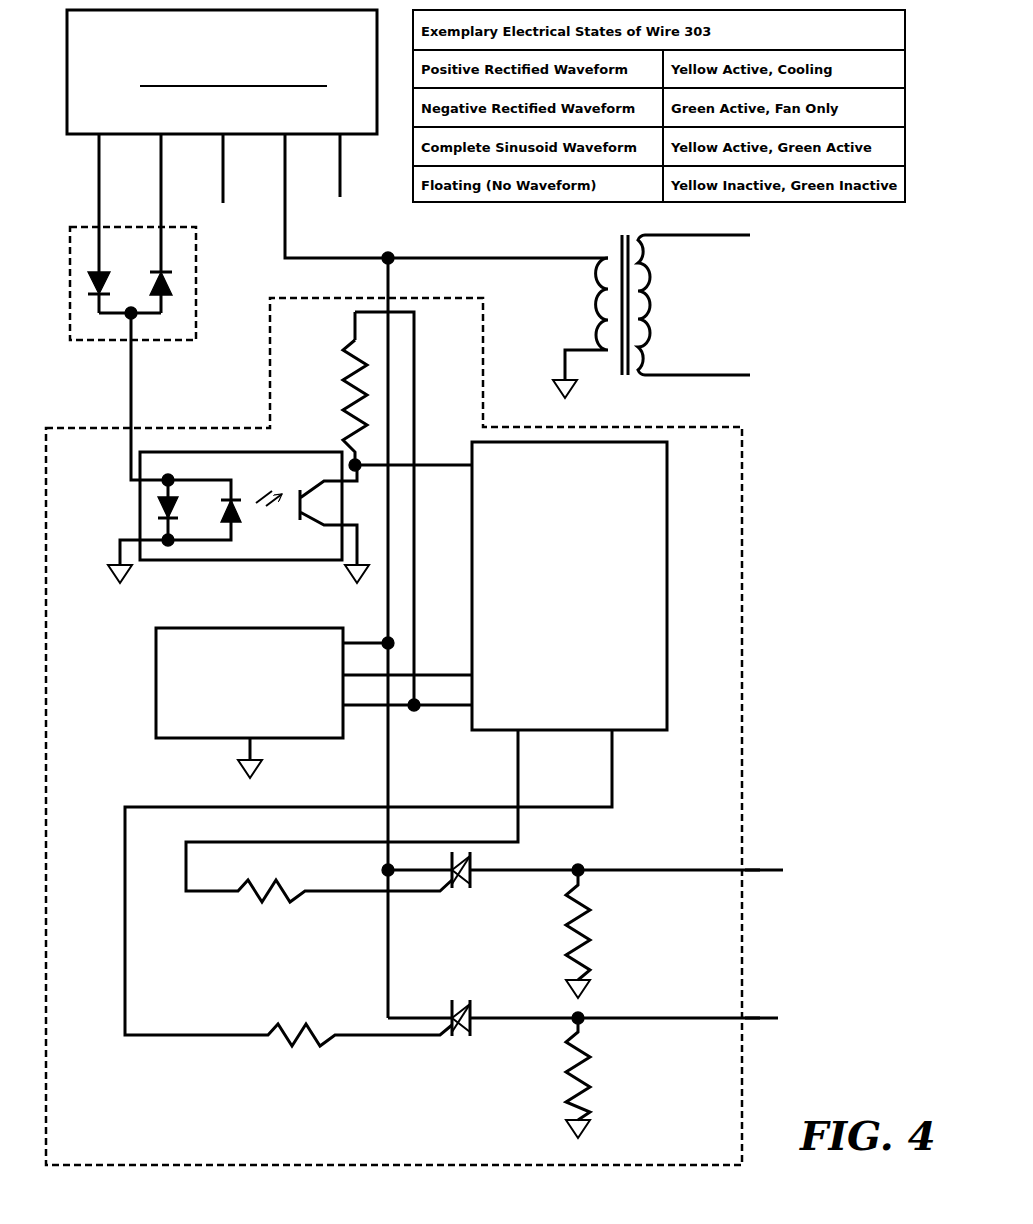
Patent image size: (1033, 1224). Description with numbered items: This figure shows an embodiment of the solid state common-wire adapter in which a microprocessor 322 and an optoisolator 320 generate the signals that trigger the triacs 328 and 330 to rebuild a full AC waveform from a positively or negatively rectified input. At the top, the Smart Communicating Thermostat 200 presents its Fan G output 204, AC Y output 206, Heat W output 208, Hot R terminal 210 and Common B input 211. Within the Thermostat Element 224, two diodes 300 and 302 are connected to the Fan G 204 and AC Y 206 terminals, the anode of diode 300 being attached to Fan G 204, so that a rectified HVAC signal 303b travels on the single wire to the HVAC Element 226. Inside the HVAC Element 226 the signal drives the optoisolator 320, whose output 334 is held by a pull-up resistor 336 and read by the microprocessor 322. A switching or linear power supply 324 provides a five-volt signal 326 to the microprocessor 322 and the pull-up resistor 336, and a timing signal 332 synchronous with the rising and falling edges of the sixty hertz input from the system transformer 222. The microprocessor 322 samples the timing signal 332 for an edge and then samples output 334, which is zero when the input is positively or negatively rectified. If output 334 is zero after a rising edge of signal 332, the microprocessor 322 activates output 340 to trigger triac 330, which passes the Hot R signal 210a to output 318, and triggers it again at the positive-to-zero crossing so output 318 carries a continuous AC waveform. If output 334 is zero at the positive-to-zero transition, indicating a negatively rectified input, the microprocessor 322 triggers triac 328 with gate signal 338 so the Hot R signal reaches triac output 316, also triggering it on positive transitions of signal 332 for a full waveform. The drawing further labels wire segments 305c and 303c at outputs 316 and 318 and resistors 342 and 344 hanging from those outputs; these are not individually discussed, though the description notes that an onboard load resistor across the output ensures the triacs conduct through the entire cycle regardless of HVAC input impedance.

The smart communicating thermostat 200 is at (85, 137).
The Fan G output 204 is at (106, 137).
The AC Y output 206 is at (168, 137).
The Heat W output 208 is at (229, 137).
The Hot R terminal 210 is at (291, 137).
The Common B input 211 is at (348, 137).
The thermostat element 224 is at (70, 268).
The diode 300 is at (90, 282).
The diode 302 is at (172, 283).
The HVAC signal 303b is at (128, 362).
The HVAC element 226 is at (746, 632).
The optoisolator 320 is at (138, 503).
The pull up resistor 336 is at (346, 350).
The optoisolator output 334 is at (470, 462).
The timing signal 332 is at (462, 676).
The Hot R signal 210a is at (392, 925).
The system transformer 222 is at (658, 352).
The microprocessor 322 is at (670, 496).
The power supply 324 is at (155, 696).
The 5 volt signal 326 is at (350, 710).
The gate signal 338 is at (515, 770).
The output 340 is at (608, 770).
The triac 328 is at (478, 886).
The gate sensitive triac 330 is at (478, 1034).
The triac output 316 is at (746, 866).
The wire 305 segment 305c is at (758, 878).
The output 318 is at (746, 1014).
The wire 303 segment 303c is at (766, 1024).
The pull-down resistor 342 is at (598, 926).
The pull-down resistor 344 is at (598, 1076).